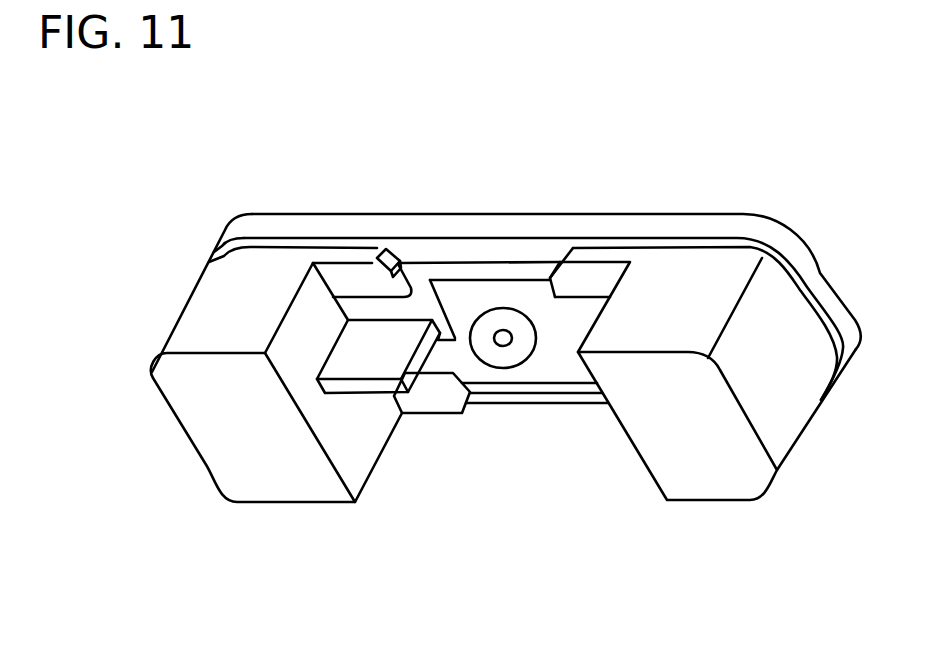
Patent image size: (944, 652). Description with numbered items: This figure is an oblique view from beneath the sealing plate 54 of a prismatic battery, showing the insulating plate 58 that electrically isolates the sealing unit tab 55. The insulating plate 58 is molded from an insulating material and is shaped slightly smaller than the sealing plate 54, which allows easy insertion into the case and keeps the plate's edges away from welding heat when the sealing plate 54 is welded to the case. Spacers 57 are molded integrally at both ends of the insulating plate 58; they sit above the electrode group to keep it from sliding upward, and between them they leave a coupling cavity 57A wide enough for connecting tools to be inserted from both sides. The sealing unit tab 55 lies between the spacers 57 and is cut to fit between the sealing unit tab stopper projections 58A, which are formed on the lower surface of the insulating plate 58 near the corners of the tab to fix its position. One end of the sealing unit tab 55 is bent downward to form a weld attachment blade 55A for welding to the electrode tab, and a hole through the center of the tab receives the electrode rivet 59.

The sealing plate 54 is at (633, 222).
The sealing unit tab 55 is at (493, 373).
The weld attachment blade 55A is at (382, 346).
The spacers 57 is at (697, 490).
The coupling cavity 57A is at (547, 448).
The insulating plate 58 is at (481, 265).
The sealing unit tab stopper projections 58A is at (381, 280).
The electrode rivet 59 is at (506, 333).